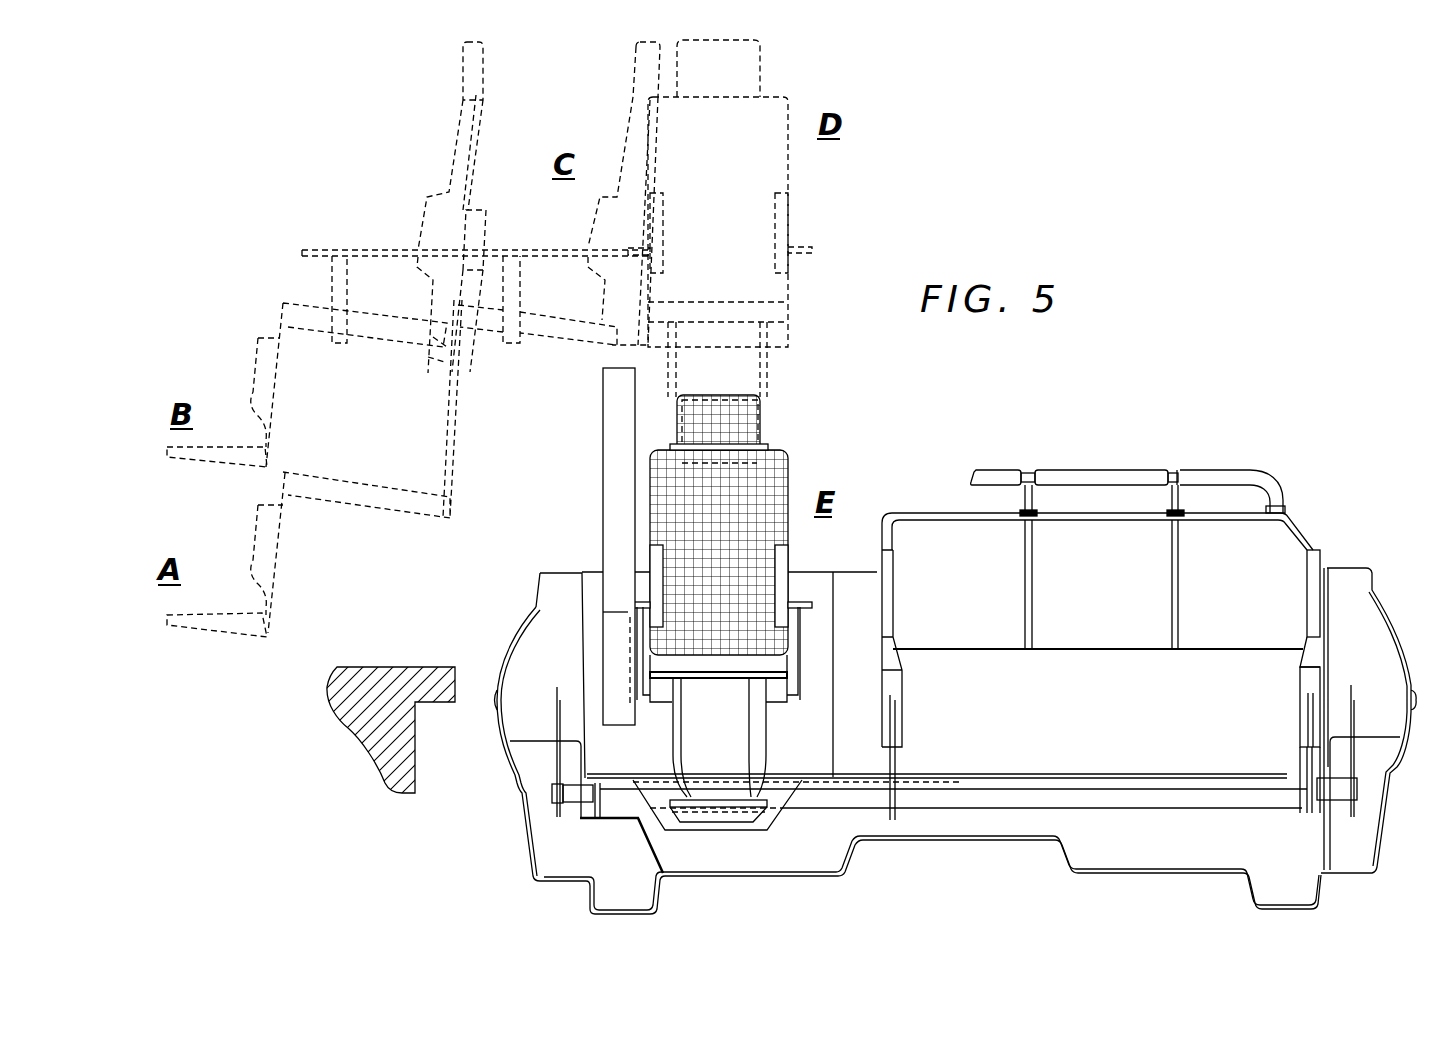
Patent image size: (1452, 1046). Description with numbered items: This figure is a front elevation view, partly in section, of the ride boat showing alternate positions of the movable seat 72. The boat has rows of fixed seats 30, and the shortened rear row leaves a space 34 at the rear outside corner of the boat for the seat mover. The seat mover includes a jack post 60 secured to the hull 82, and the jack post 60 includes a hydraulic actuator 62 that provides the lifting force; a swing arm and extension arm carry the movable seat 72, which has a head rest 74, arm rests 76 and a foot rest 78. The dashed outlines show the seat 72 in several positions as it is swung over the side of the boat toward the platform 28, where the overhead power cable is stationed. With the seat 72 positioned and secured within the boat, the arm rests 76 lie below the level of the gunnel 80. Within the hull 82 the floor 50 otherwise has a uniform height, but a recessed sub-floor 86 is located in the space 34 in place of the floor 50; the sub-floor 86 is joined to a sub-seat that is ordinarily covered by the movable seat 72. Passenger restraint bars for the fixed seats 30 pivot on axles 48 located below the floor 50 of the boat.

The platform 28 is at (385, 750).
The fixed seats 30 is at (1267, 540).
The space 34 is at (850, 621).
The axles 48 is at (1193, 798).
The floor 50 is at (900, 773).
The jack post 60 is at (603, 425).
The hydraulic actuator 62 is at (633, 640).
The movable seat 72 is at (433, 212).
The head rest 74 is at (745, 70).
The arm rest 76 is at (348, 250).
The foot rest 78 is at (232, 627).
The gunnel 80 is at (560, 572).
The hull 82 is at (813, 875).
The recessed sub-floor 86 is at (716, 832).